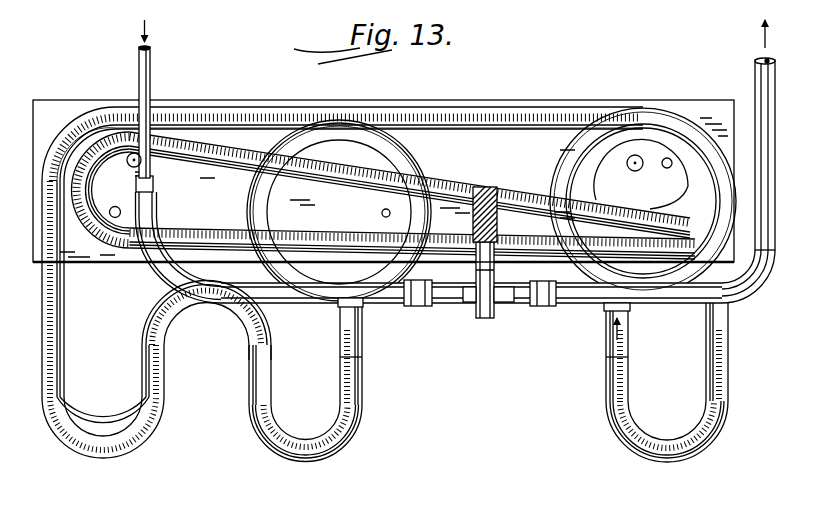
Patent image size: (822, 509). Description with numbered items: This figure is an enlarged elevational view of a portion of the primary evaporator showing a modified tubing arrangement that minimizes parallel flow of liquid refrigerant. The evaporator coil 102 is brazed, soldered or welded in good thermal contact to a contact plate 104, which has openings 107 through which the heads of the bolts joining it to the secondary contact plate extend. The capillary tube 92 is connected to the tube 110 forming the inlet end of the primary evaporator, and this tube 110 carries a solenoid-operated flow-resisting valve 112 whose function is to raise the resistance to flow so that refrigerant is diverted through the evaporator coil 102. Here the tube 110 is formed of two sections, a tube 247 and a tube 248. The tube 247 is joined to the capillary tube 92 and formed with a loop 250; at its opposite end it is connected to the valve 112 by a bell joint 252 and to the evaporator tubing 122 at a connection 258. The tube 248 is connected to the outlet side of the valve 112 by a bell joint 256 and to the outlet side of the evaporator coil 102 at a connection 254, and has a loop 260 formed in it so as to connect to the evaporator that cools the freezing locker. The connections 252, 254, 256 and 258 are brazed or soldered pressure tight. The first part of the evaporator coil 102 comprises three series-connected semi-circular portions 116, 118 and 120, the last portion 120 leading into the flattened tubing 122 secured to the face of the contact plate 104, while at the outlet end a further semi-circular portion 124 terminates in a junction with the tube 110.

The capillary tube 92 is at (139, 77).
The evaporator coil 102 is at (242, 105).
The contact plate 104 is at (522, 166).
The openings 107 is at (118, 208).
The tube 110 is at (779, 80).
The solenoid-operated flow-resisting valve 112 is at (495, 310).
The semi-circular portion 116 is at (312, 452).
The semi-circular portion 118 is at (177, 312).
The semi-circular portion 120 is at (104, 455).
The tubing 122 is at (461, 115).
The semi-circular portion 124 is at (663, 456).
The tube 247 is at (270, 330).
The tube 248 is at (393, 298).
The loop 250 is at (631, 131).
The bell joint 252 is at (541, 306).
The connection 254 is at (626, 306).
The bell joint 256 is at (425, 305).
The connection 258 is at (363, 303).
The loop 260 is at (323, 126).